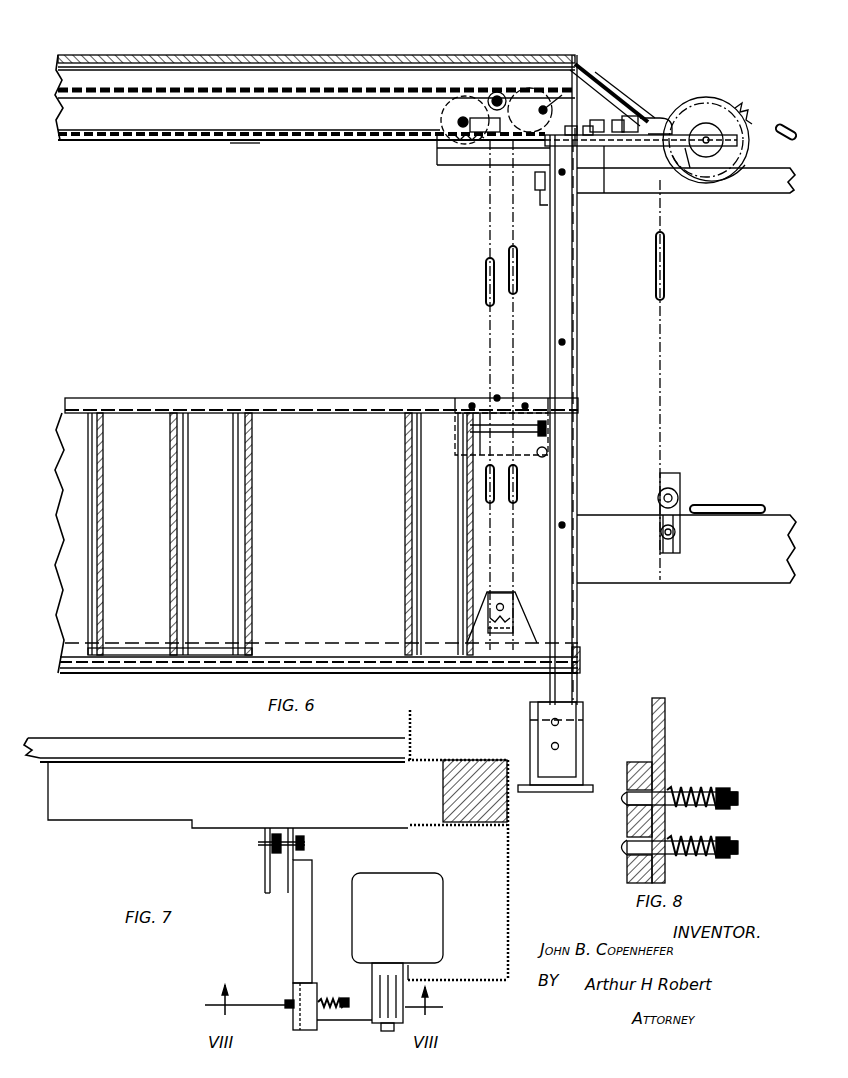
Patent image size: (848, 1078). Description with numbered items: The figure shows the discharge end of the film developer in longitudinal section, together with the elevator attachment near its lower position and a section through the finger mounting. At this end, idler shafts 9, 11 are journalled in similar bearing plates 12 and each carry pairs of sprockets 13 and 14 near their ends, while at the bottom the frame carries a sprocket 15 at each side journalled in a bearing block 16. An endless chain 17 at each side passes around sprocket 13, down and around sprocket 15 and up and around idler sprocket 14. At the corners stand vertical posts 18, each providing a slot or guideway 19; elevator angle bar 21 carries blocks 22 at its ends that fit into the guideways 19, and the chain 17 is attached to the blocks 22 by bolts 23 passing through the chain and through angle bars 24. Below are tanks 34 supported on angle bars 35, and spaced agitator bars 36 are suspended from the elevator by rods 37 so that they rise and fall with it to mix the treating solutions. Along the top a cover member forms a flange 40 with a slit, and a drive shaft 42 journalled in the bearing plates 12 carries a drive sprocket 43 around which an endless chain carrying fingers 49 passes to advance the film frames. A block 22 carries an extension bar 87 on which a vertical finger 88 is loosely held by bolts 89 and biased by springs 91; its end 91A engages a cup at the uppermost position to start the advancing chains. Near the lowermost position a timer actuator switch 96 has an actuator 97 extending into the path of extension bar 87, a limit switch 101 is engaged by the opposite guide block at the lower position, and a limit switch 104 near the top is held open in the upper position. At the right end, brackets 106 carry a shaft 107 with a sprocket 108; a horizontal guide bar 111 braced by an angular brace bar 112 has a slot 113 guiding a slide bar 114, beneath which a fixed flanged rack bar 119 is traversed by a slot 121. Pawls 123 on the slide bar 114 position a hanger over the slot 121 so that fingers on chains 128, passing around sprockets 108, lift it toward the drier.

In FIG. 6, the idler shaft 9 is at (445, 140).
In FIG. 6, the idler shaft 11 is at (497, 92).
In FIG. 6, the bearing plate 12 is at (480, 160).
In FIG. 6, the sprocket 13 is at (512, 98).
In FIG. 6, the idler sprocket 14 is at (462, 143).
In FIG. 6, the sprocket 15 is at (499, 596).
In FIG. 6, the bearing block 16 is at (518, 598).
In FIG. 6, the endless chain 17 is at (486, 283).
In FIG. 6, the vertical post 18 is at (578, 270).
In FIG. 7, the vertical post 18 is at (510, 893).
In FIG. 7, the slot or guideway 19 is at (446, 768).
In FIG. 6, the elevator angle bar 21 is at (308, 410).
In FIG. 7, the elevator angle bar 21 is at (190, 748).
In FIG. 6, the block 22 is at (462, 460).
In FIG. 7, the block 22 is at (86, 815).
In FIG. 7, the bolt 23 is at (260, 842).
In FIG. 7, the angle bar 24 is at (288, 893).
In FIG. 6, the tank 34 is at (170, 486).
In FIG. 6, the angle bar 35 is at (312, 660).
In FIG. 6, the bar 36 is at (203, 650).
In FIG. 6, the rod 37 is at (234, 486).
In FIG. 6, the flange 40 is at (158, 141).
In FIG. 6, the drive shaft 42 is at (615, 79).
In FIG. 6, the drive sprocket 43 is at (543, 95).
In FIG. 6, the finger 49 is at (252, 142).
In FIG. 7, the extension bar 87 is at (296, 950).
In FIG. 8, the extension bar 87 is at (640, 818).
In FIG. 7, the vertical finger 88 is at (306, 980).
In FIG. 8, the vertical finger 88 is at (666, 715).
In FIG. 7, the bolt 89 is at (348, 998).
In FIG. 8, the bolt 89 is at (740, 845).
In FIG. 7, the spring 91 is at (322, 1000).
In FIG. 8, the spring 91 is at (720, 786).
In FIG. 7, the end of finger 91A is at (288, 1022).
In FIG. 7, the timer actuator switch 96 is at (382, 888).
In FIG. 7, the actuator 97 is at (348, 1023).
In FIG. 6, the limit switch 101 is at (544, 460).
In FIG. 6, the limit switch 104 is at (548, 208).
In FIG. 6, the bracket 106 is at (680, 178).
In FIG. 6, the shaft 107 is at (707, 138).
In FIG. 6, the sprocket 108 is at (752, 118).
In FIG. 6, the horizontal guide bar 111 is at (638, 116).
In FIG. 6, the angular brace bar 112 is at (615, 118).
In FIG. 6, the slot 113 is at (590, 82).
In FIG. 6, the slide bar 114 is at (480, 122).
In FIG. 6, the fixed flanged rack bar 119 is at (686, 182).
In FIG. 6, the slot 121 is at (660, 148).
In FIG. 6, the pawl 123 is at (655, 118).
In FIG. 6, the chain 128 is at (664, 288).